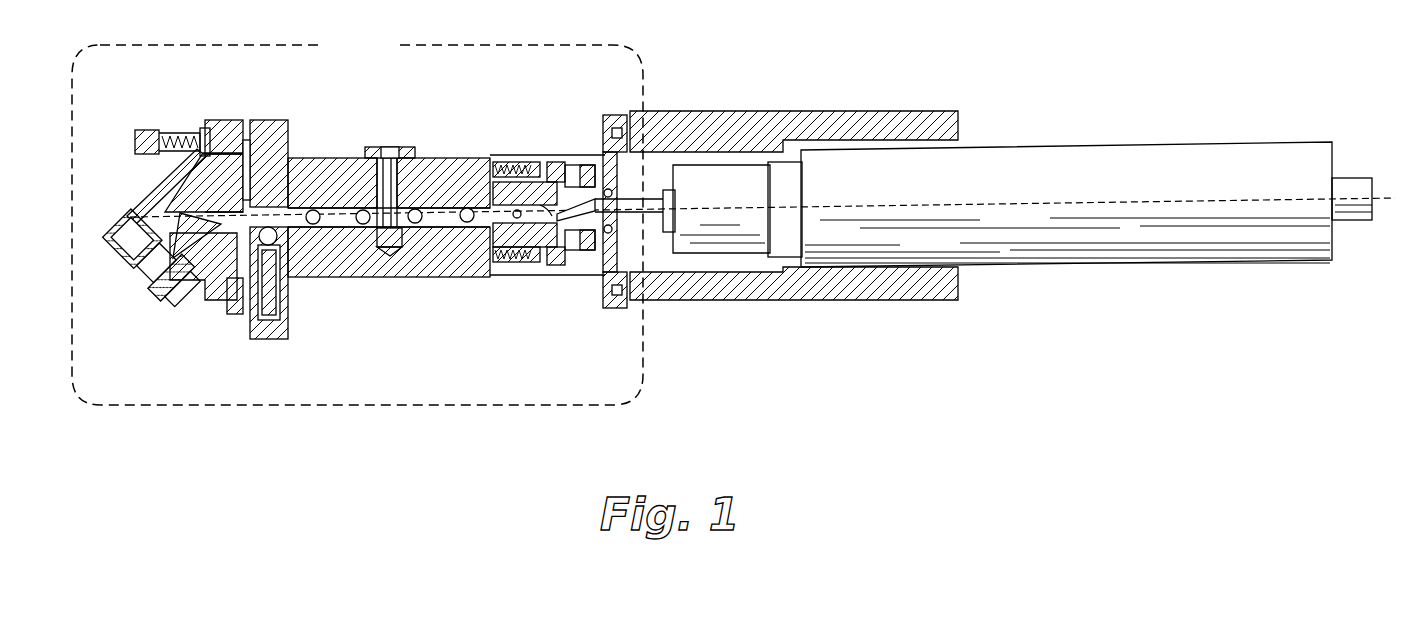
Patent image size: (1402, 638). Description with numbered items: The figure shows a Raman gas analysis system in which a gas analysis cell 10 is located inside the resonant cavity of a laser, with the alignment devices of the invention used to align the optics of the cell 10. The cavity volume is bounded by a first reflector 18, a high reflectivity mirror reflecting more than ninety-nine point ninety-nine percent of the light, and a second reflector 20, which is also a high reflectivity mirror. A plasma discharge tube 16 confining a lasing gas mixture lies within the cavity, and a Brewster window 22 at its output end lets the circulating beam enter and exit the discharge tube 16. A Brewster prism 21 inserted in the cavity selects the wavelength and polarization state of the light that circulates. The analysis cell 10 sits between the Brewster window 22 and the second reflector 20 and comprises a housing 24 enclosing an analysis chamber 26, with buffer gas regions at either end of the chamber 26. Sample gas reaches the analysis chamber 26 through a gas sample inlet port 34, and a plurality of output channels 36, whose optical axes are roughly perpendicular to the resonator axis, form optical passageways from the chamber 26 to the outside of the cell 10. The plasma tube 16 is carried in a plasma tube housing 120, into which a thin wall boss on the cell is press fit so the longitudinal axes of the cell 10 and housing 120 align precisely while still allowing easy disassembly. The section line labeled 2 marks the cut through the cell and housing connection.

The section line 2- 2 is at (357, 204).
The gas analysis cell 10 is at (481, 292).
The plasma discharge tube 16 is at (1115, 152).
The first reflector 18 is at (1372, 180).
The second reflector 20 is at (162, 232).
The Brewster prism 21 is at (180, 248).
The Brewster window 22 is at (562, 218).
The housing 24 is at (312, 158).
The analysis chamber 26 is at (443, 208).
The gas sample inlet port 34 is at (388, 147).
The output channels 36 is at (361, 226).
The plasma tube housing 120 is at (796, 110).